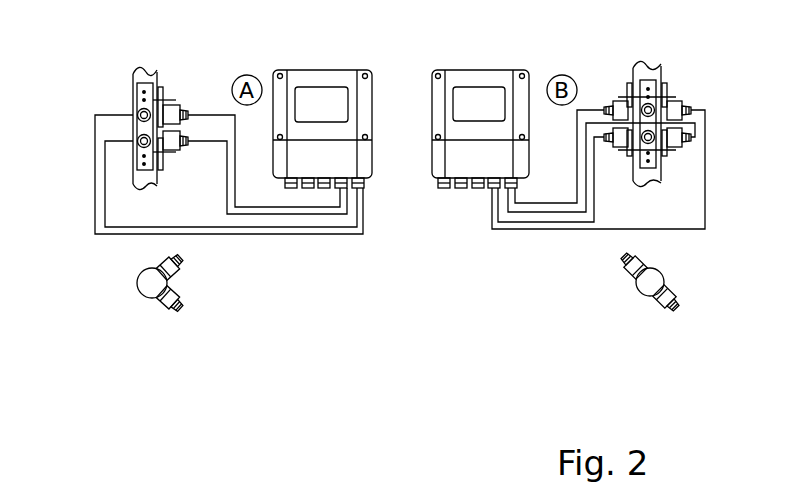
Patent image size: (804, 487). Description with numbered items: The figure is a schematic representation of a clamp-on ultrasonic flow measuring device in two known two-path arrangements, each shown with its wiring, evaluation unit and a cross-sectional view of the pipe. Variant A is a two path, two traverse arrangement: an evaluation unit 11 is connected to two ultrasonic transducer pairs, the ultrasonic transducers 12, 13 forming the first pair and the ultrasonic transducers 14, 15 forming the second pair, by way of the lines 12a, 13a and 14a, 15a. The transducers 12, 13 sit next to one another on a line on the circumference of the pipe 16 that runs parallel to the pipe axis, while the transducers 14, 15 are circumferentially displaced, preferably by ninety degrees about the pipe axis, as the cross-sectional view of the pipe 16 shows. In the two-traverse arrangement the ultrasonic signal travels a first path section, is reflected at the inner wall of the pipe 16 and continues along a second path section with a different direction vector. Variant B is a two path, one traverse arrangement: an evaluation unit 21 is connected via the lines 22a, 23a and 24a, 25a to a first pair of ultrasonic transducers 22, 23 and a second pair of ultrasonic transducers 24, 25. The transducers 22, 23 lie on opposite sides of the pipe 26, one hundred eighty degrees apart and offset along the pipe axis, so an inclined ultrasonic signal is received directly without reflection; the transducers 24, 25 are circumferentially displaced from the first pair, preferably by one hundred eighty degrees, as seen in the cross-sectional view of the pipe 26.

The evaluation unit 11 is at (322, 75).
The ultrasonic transducer 12 is at (173, 108).
The line 12a is at (207, 114).
The ultrasonic transducer 13 is at (177, 150).
The line 13a is at (223, 228).
The ultrasonic transducer 14 is at (133, 93).
The line 14a is at (110, 115).
The ultrasonic transducer 15 is at (135, 150).
The line 15a is at (107, 202).
The pipe 16 is at (148, 77).
The evaluation unit 21 is at (480, 77).
The ultrasonic transducer 22 is at (616, 100).
The line 22a is at (593, 108).
The ultrasonic transducer 23 is at (683, 141).
The line 23a is at (700, 125).
The ultrasonic transducer 24 is at (678, 100).
The line 24a is at (705, 207).
The ultrasonic transducer 25 is at (612, 148).
The line 25a is at (597, 203).
The pipe 26 is at (643, 80).